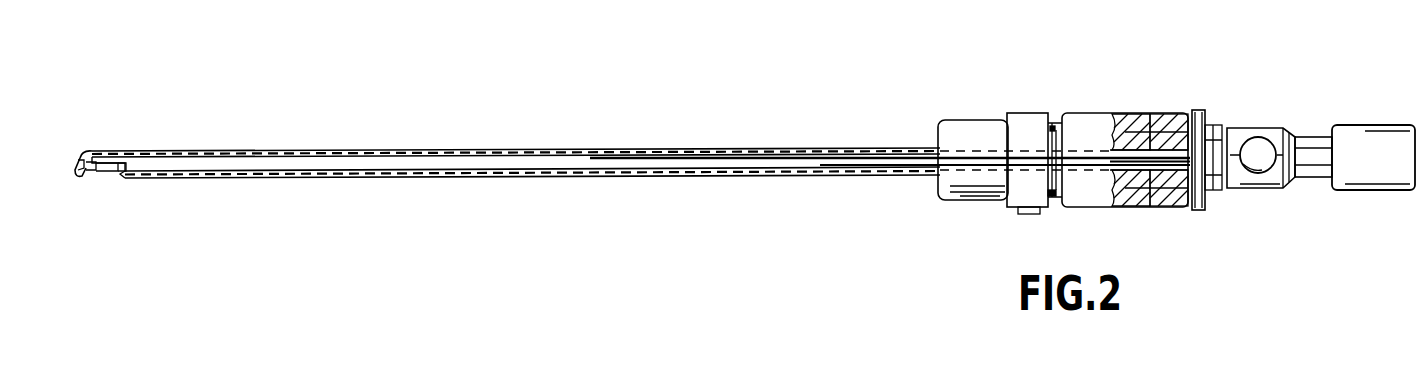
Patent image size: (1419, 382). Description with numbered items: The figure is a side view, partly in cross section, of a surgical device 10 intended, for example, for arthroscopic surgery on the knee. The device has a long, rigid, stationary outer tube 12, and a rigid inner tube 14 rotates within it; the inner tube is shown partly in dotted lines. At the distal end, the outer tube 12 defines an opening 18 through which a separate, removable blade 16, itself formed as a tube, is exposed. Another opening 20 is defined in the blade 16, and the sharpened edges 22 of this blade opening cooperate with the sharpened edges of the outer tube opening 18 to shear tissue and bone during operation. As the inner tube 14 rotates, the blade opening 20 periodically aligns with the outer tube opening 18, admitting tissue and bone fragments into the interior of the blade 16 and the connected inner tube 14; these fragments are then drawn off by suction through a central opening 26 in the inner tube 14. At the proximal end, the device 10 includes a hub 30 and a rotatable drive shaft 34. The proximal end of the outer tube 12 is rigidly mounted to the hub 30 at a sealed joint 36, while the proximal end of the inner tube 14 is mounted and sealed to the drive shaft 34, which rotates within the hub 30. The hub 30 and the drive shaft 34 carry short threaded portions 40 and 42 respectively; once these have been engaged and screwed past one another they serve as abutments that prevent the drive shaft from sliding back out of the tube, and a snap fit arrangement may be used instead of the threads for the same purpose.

The surgical device 10 is at (842, 90).
The outer tube 12 is at (625, 153).
The inner tube 14 is at (470, 154).
The blade 16 is at (124, 176).
The opening 18 is at (77, 170).
The opening 20 is at (106, 172).
The sharpened edges 22 is at (88, 172).
The central opening 26 is at (1262, 170).
The hub 30 is at (1070, 112).
The drive shaft 34 is at (1278, 130).
The sealed joint 36 is at (935, 183).
The threaded portion 40 is at (1160, 135).
The threaded portion 42 is at (1130, 128).